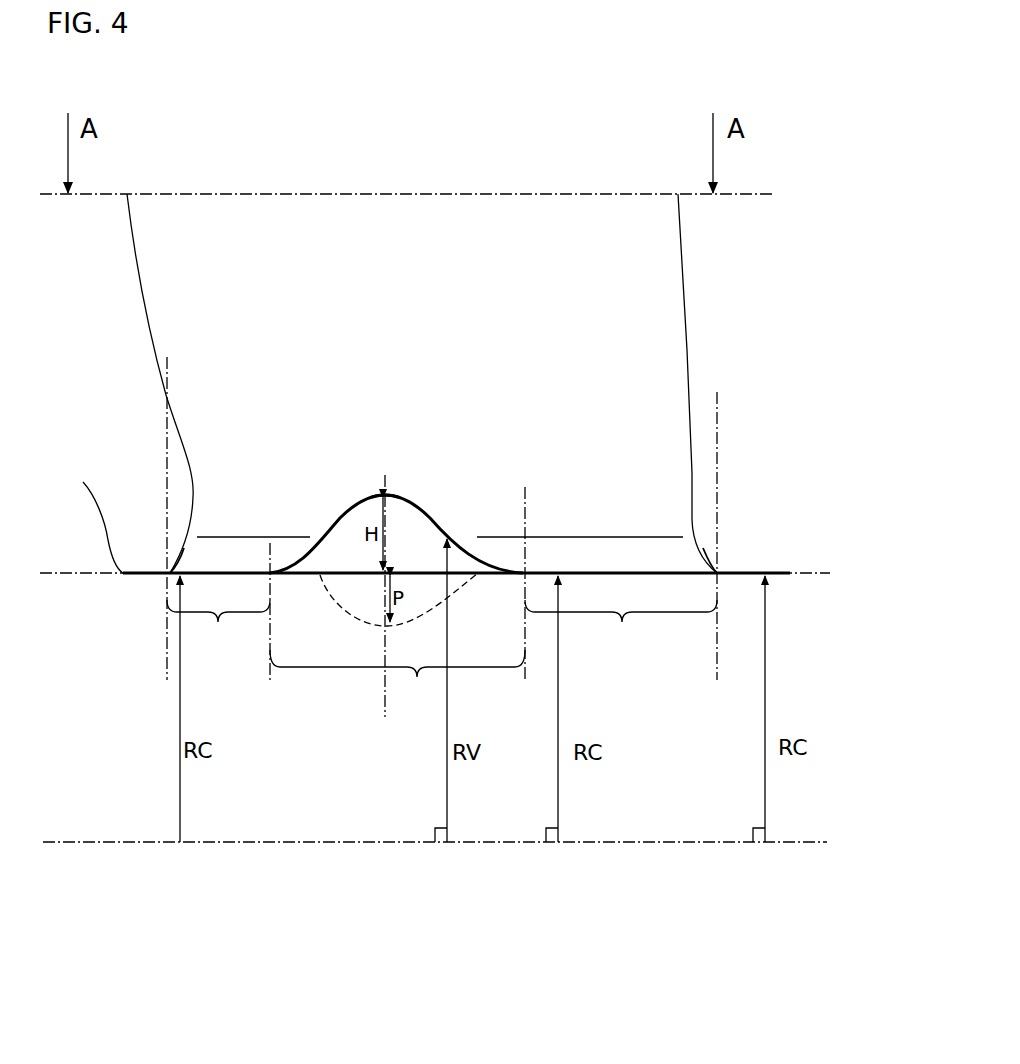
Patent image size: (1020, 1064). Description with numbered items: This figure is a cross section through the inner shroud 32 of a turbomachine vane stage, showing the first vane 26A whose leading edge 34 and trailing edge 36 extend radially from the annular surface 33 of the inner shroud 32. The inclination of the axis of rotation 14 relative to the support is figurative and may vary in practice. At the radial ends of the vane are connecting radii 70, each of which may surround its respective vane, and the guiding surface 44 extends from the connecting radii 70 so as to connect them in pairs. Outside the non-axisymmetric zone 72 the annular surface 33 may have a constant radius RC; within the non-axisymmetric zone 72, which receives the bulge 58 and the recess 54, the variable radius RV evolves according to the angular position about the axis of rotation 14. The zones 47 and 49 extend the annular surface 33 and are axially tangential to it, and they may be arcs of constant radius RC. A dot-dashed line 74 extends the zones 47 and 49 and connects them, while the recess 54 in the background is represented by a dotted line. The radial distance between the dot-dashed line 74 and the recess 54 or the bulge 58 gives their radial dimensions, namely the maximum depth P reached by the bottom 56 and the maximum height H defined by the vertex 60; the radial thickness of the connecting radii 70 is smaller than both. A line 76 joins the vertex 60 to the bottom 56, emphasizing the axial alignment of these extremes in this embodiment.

The axis of rotation 14 is at (348, 843).
The first vane 26A is at (318, 285).
The inner shroud 32 is at (134, 680).
The annular surface 33 is at (95, 508).
The leading edge 34 is at (155, 365).
The trailing edge 36 is at (686, 280).
The guiding surface 44 is at (540, 425).
The zone 47 is at (218, 629).
The zone 49 is at (621, 629).
The recess 54 is at (320, 577).
The bottom 56 is at (383, 628).
The bulge 58 is at (338, 520).
The vertex 60 is at (390, 495).
The connecting radius 70 is at (176, 556).
The non-axisymmetric zone 72 is at (397, 680).
The dot-dashed line 74 is at (395, 570).
The line 76 is at (385, 697).